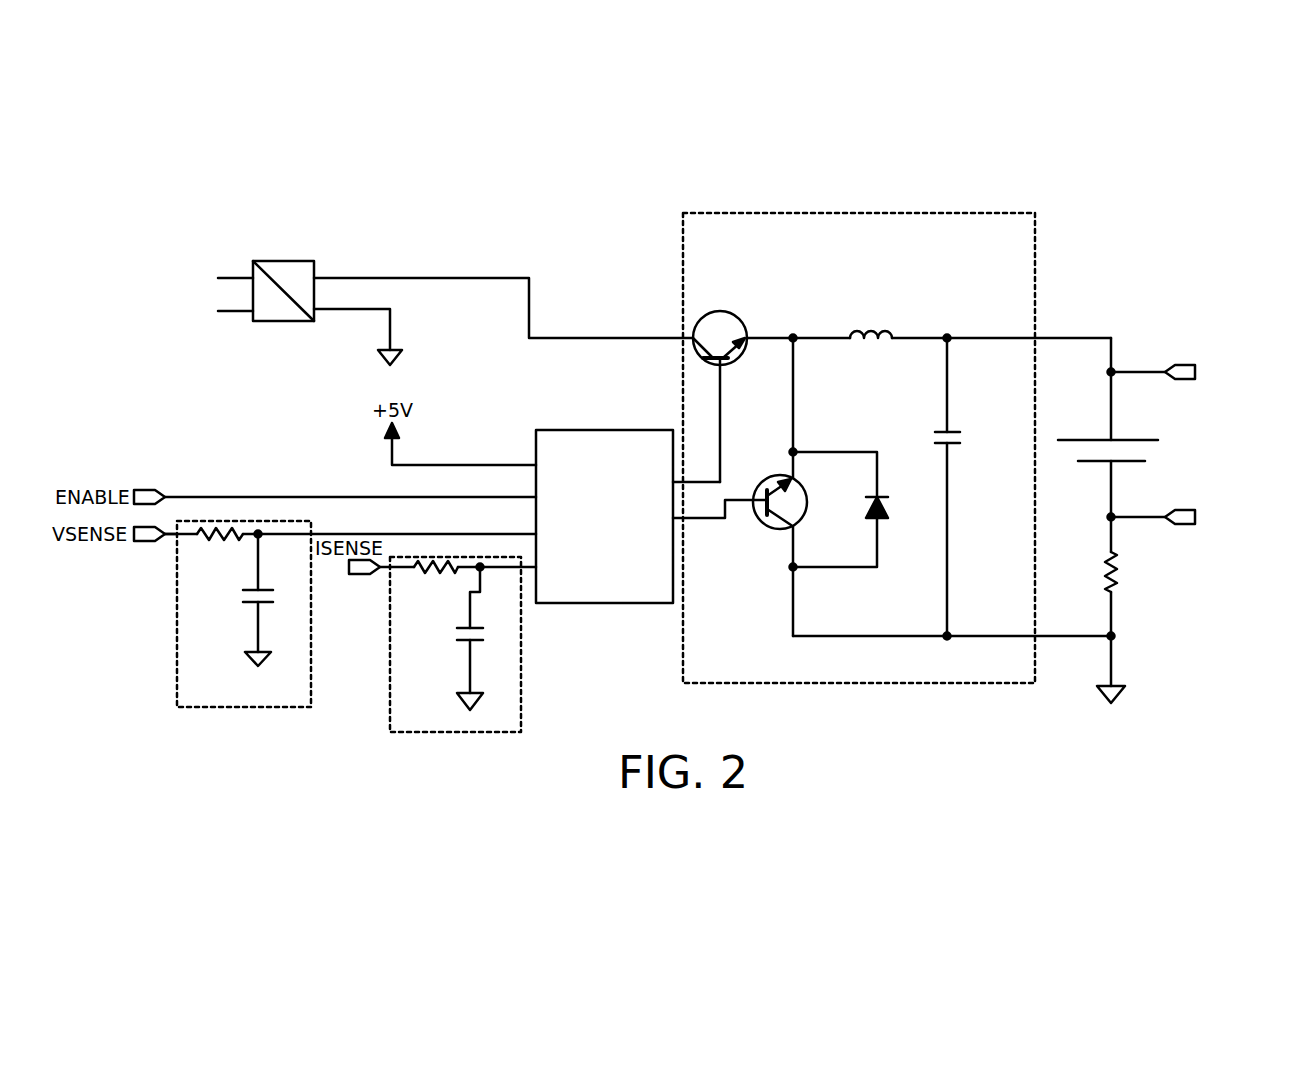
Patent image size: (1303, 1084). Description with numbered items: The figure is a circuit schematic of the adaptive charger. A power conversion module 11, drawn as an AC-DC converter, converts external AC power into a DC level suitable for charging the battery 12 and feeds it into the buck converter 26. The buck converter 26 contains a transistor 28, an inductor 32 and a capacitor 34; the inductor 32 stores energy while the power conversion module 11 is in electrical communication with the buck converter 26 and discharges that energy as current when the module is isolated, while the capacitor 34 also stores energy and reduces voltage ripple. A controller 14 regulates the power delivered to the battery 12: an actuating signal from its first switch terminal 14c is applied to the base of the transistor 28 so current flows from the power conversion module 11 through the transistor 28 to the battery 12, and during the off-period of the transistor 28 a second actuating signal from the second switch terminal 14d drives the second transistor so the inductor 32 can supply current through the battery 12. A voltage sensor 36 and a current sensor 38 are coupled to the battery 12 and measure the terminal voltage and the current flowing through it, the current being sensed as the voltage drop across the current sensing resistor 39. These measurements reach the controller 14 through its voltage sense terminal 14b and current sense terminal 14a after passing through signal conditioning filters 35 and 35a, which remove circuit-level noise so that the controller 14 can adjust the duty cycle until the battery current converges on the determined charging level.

The power conversion module 11 is at (280, 258).
The battery 12 is at (1178, 436).
The controller 14 is at (600, 603).
The ISENSE terminal 14a is at (388, 570).
The VSENSE terminal 14b is at (176, 537).
The SW1 terminal 14c is at (722, 440).
The SW2 terminal 14d is at (705, 521).
The buck converter 26 is at (892, 428).
The transistor 28 is at (718, 311).
The inductor 32 is at (886, 336).
The capacitor 34 is at (950, 450).
The filter 35 is at (177, 622).
The filter 35a is at (390, 677).
The voltage sensor 36 is at (1148, 370).
The current sensor 38 is at (1133, 520).
The current sensing resistor 39 is at (1118, 572).